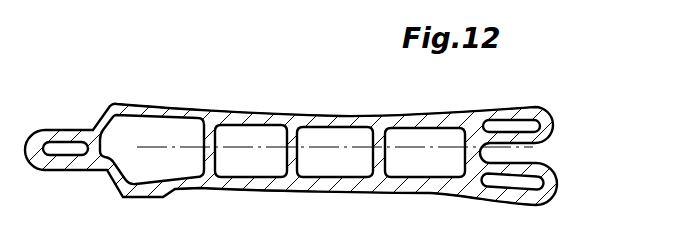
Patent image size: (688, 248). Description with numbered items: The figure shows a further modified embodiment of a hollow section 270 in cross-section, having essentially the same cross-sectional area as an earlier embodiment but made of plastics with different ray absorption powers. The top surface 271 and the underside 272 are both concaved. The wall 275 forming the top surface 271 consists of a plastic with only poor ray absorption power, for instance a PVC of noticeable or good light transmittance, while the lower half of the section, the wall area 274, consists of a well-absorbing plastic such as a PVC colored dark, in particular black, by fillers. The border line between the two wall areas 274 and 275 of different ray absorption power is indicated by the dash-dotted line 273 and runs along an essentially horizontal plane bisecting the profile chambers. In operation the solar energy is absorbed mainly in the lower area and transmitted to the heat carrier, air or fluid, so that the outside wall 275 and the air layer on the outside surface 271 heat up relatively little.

The hollow section 270 is at (182, 96).
The top surface 271 is at (325, 106).
The underside 272 is at (312, 183).
The border line 273 is at (137, 147).
The lower wall area 274 is at (145, 192).
The wall 275 is at (255, 120).